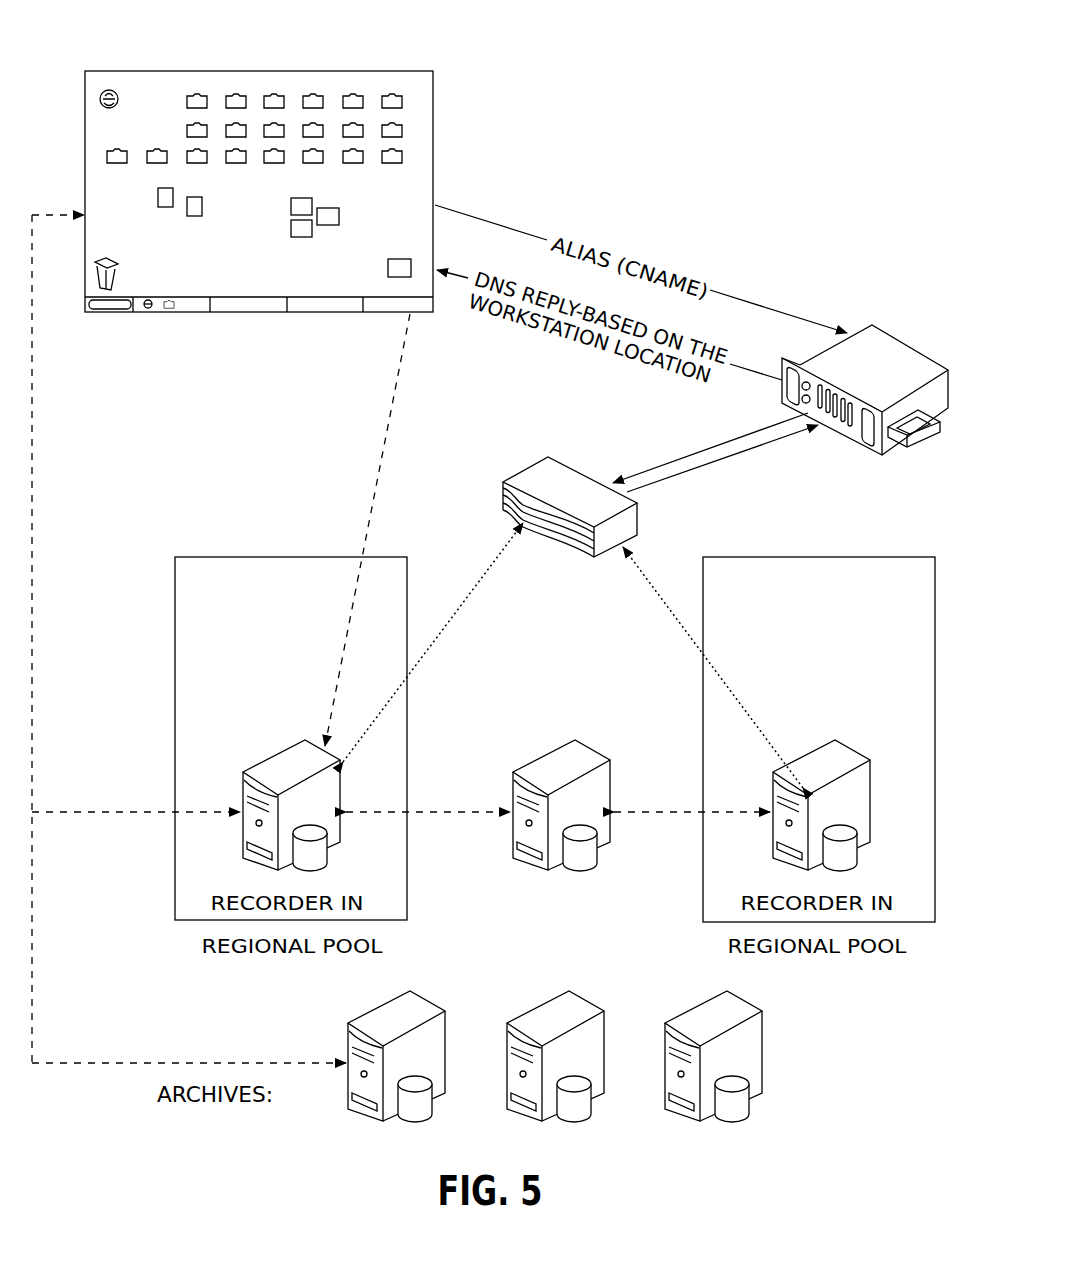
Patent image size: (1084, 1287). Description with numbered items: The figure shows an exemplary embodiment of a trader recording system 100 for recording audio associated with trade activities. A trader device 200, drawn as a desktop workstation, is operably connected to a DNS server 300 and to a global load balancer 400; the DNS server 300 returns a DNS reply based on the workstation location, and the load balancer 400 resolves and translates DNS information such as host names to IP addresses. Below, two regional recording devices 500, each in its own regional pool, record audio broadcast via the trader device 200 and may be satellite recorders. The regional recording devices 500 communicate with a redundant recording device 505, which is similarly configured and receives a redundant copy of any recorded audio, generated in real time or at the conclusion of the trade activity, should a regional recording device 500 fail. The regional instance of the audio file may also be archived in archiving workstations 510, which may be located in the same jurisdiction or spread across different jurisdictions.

The trader recording system 100 is at (743, 145).
The trader device 200 is at (178, 70).
The DNS server 300 is at (893, 340).
The load balancer 400 is at (533, 478).
The recording device 500 is at (280, 762).
The redundant recording device 505 is at (593, 760).
The archiving workstations 510 is at (700, 1005).